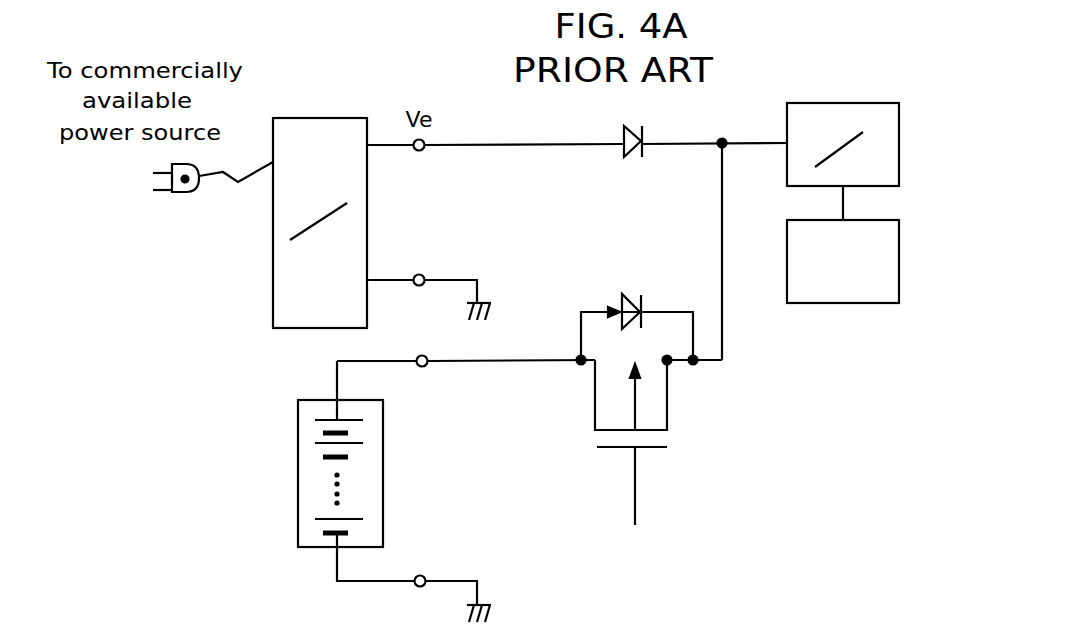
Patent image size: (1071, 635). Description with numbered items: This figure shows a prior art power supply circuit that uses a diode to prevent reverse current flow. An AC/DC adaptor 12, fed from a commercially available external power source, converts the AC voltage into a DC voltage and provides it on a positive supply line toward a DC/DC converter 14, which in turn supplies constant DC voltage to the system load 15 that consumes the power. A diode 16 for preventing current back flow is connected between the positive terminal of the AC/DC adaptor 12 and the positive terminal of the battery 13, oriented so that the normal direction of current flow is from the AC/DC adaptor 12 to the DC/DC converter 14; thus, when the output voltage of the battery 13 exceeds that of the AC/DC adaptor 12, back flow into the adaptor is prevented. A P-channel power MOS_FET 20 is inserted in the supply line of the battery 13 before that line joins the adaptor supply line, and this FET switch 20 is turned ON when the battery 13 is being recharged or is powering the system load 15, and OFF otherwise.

The AC/DC adaptor 12 is at (322, 118).
The battery 13 is at (383, 455).
The DC/DC converter 14 is at (900, 125).
The system load 15 is at (900, 242).
The diode 16 is at (637, 167).
The P-channel power MOS_FET 20 is at (690, 404).